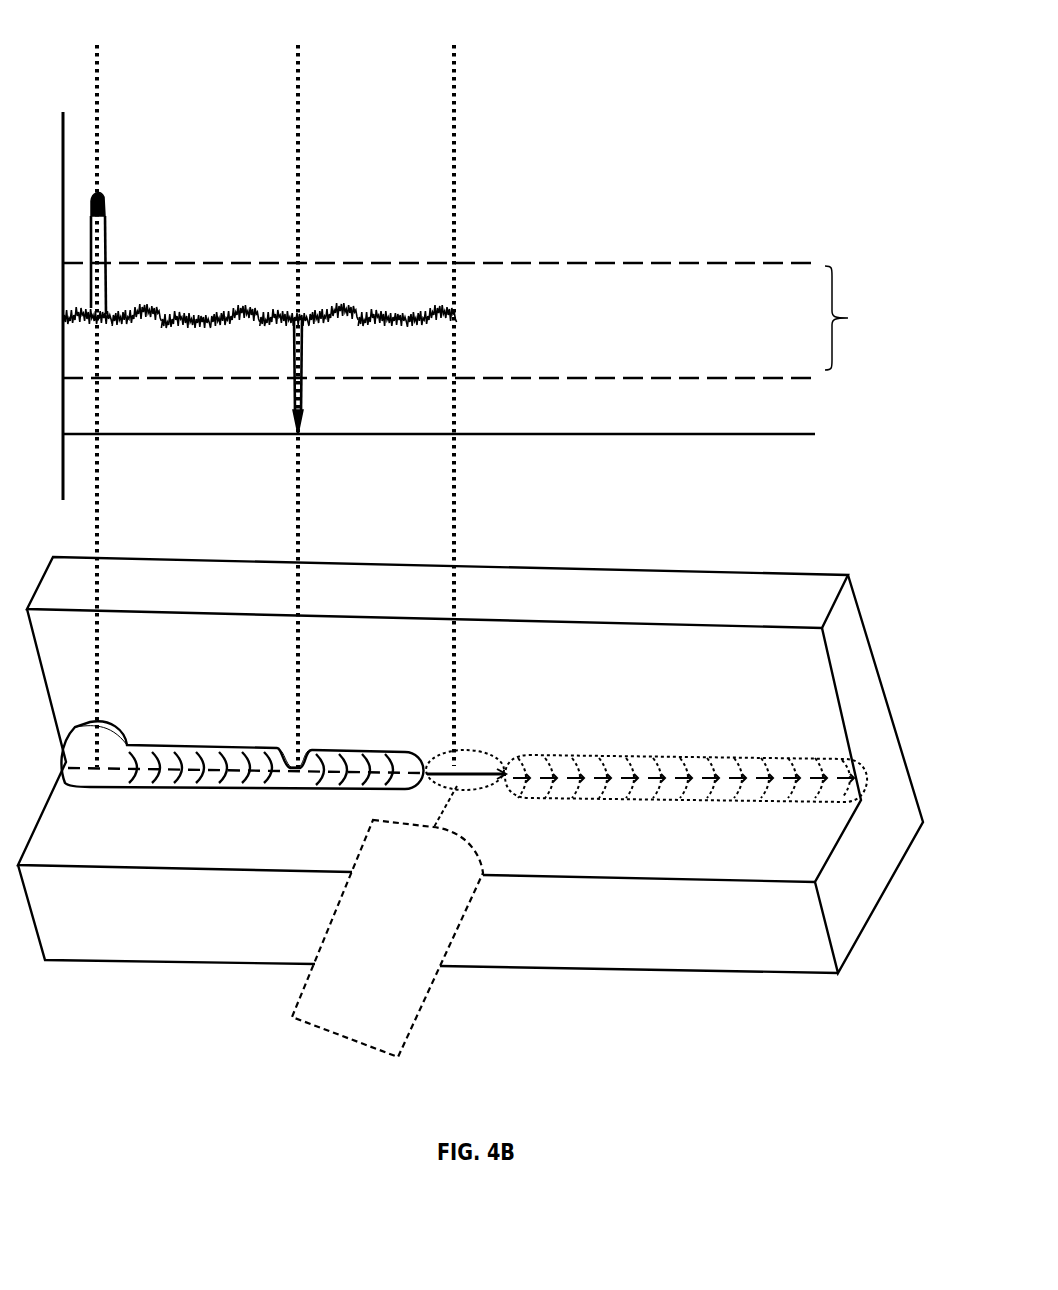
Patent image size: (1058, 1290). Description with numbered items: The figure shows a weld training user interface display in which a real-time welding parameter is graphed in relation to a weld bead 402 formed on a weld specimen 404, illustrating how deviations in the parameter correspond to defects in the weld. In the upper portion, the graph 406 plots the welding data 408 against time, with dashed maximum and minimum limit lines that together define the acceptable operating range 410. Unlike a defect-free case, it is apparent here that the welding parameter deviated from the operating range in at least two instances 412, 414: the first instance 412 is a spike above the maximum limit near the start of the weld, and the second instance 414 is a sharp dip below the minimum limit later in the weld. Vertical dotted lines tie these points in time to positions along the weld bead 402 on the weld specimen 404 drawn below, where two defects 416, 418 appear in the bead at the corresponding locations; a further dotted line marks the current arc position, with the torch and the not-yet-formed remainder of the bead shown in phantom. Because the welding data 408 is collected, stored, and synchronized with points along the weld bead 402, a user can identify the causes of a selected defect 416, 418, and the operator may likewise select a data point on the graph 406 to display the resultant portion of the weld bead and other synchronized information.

The weld bead 402 is at (212, 744).
The weld specimen 404 is at (772, 572).
The graph 406 is at (813, 160).
The welding data 408 is at (371, 283).
The operating range 410 is at (872, 266).
The deviation instance 412 is at (107, 213).
The deviation instance 414 is at (302, 390).
The defect 416 is at (117, 737).
The defect 418 is at (313, 748).